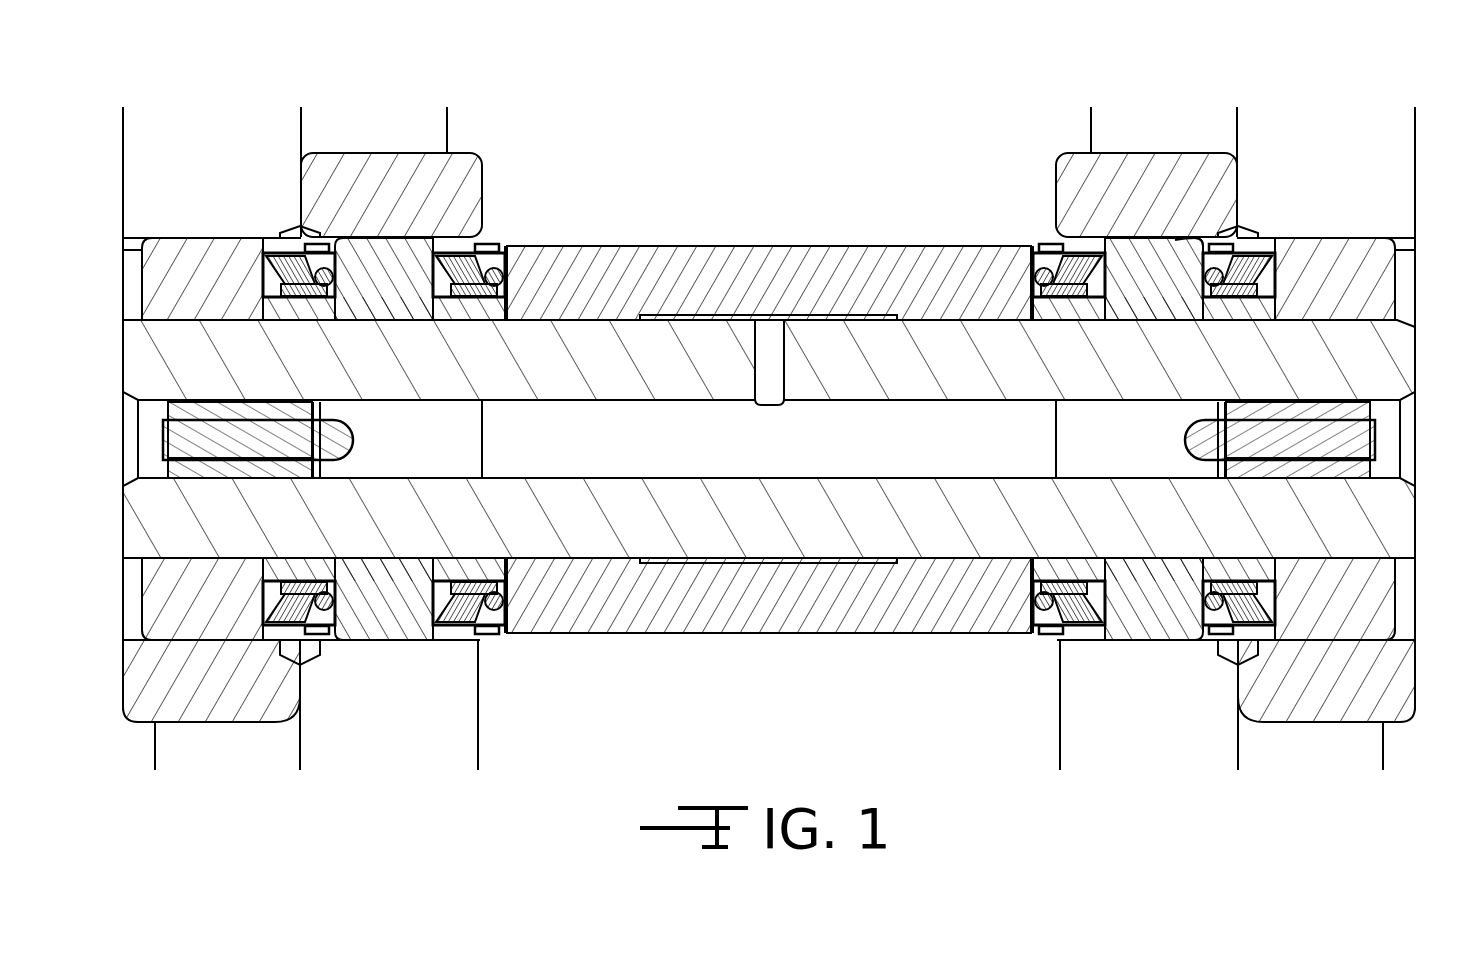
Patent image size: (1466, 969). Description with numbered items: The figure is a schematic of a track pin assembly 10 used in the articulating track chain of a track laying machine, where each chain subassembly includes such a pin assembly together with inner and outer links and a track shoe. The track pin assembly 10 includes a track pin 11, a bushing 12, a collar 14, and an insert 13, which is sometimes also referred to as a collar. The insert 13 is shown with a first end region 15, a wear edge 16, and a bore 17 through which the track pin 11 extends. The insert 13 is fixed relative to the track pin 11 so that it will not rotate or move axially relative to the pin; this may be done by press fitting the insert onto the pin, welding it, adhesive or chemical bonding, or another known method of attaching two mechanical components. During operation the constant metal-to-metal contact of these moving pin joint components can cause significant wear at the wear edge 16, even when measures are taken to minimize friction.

The track pin assembly 10 is at (712, 645).
The track pin 11 is at (1383, 355).
The bushing 12 is at (825, 265).
The insert 13 is at (1142, 267).
The collar 14 is at (1335, 250).
The first end region 15 is at (1032, 307).
The wear edge 16 is at (1182, 258).
The bore 17 is at (1143, 320).